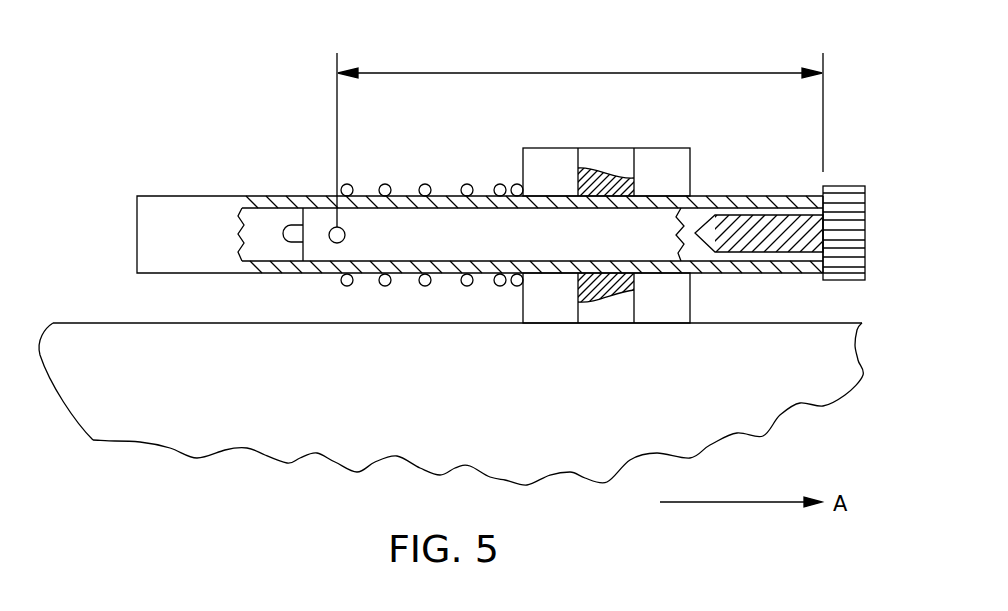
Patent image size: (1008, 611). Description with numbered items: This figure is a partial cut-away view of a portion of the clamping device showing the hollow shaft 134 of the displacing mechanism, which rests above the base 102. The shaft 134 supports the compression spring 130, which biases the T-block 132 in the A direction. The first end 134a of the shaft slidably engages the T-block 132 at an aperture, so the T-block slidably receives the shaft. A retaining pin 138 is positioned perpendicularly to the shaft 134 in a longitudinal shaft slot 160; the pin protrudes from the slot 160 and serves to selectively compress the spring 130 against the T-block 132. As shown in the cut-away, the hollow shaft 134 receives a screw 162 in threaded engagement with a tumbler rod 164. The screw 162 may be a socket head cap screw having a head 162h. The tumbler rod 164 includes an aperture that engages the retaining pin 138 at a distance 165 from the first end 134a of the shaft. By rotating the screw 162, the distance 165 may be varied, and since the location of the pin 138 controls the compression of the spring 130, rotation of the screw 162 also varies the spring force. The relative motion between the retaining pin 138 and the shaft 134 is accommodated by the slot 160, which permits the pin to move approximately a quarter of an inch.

The base 102 is at (100, 430).
The compression spring 130 is at (385, 184).
The T-block 132 is at (662, 148).
The hollow shaft 134 is at (183, 195).
The first end of the shaft 134a is at (822, 277).
The retaining pin 138 is at (335, 228).
The longitudinal shaft slot 160 is at (283, 234).
The screw 162 is at (777, 222).
The head 162h is at (845, 186).
The tumbler rod 164 is at (447, 228).
The distance 165 is at (580, 70).